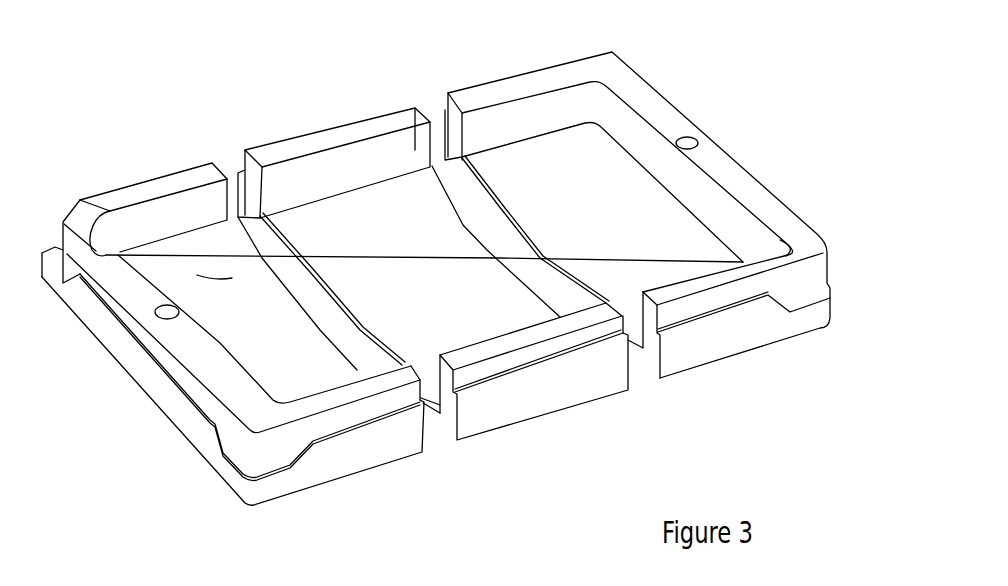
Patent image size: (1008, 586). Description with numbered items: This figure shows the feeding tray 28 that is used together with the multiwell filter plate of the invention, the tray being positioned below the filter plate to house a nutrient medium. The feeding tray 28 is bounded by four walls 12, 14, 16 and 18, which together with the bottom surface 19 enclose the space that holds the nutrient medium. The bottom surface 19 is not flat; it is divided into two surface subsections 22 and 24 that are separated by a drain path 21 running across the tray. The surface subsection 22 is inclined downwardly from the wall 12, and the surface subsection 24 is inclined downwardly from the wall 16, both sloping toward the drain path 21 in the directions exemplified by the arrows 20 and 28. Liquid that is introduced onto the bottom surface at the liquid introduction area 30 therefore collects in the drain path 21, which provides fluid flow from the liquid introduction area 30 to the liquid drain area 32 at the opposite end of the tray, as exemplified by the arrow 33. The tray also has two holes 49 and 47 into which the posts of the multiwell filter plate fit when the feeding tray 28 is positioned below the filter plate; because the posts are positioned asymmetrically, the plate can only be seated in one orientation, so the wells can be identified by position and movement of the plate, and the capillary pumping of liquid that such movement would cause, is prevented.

The wall 12 is at (343, 135).
The wall 14 is at (635, 95).
The wall 16 is at (347, 393).
The wall 18 is at (217, 375).
The bottom surface 19 is at (202, 247).
The arrow 20 is at (358, 253).
The drain path 21 is at (405, 257).
The surface subsection 22 is at (461, 249).
The surface subsection 24 is at (354, 309).
The feeding tray 28 is at (768, 155).
The liquid introduction area 30 is at (118, 255).
The liquid drain area 32 is at (776, 250).
The arrow 33 is at (678, 253).
The hole 47 is at (688, 140).
The hole 49 is at (163, 308).